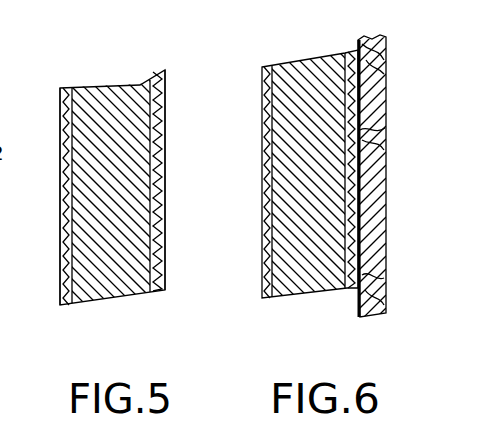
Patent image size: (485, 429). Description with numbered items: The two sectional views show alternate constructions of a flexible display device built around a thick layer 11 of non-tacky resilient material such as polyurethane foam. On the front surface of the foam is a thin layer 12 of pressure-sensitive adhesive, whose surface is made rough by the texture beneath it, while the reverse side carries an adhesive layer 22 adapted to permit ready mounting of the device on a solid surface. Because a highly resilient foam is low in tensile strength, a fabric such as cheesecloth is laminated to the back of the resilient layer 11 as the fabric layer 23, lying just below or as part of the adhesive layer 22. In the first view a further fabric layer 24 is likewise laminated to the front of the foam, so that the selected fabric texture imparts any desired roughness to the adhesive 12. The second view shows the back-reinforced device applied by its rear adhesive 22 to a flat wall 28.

In FIG. 5, the layer of non-tacky resilient material 11 is at (119, 85).
In FIG. 6, the layer of non-tacky resilient material 11 is at (286, 67).
In FIG. 5, the pressure-sensitive adhesive layer 12 is at (58, 186).
In FIG. 6, the pressure-sensitive adhesive layer 12 is at (262, 222).
In FIG. 5, the adhesive layer 22 is at (166, 185).
In FIG. 6, the adhesive layer 22 is at (356, 290).
In FIG. 5, the fabric layer 23 is at (153, 75).
In FIG. 6, the fabric layer 23 is at (350, 53).
In FIG. 5, the fabric layer 24 is at (75, 86).
In FIG. 6, the flat wall 28 is at (386, 178).